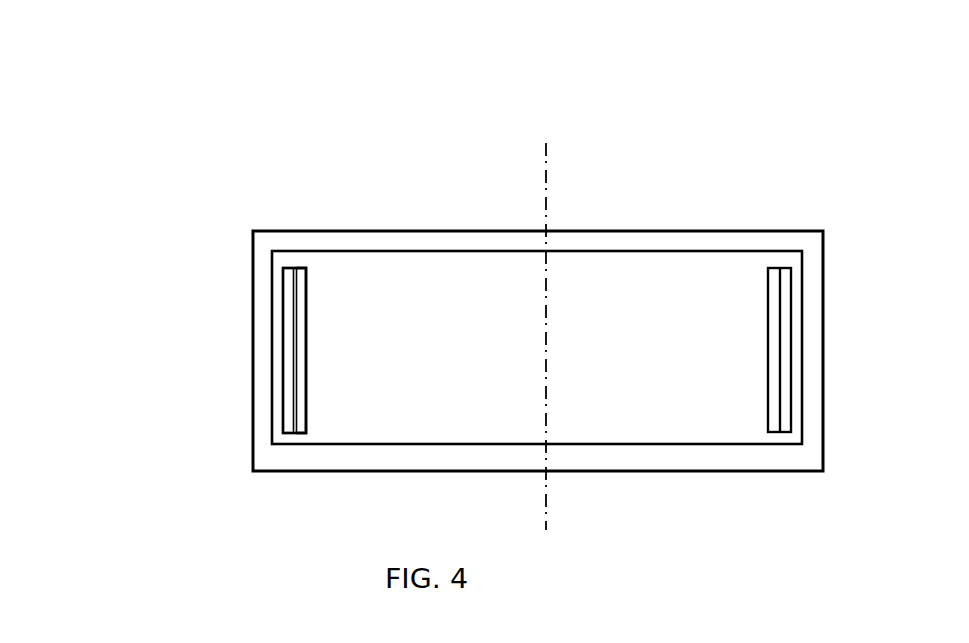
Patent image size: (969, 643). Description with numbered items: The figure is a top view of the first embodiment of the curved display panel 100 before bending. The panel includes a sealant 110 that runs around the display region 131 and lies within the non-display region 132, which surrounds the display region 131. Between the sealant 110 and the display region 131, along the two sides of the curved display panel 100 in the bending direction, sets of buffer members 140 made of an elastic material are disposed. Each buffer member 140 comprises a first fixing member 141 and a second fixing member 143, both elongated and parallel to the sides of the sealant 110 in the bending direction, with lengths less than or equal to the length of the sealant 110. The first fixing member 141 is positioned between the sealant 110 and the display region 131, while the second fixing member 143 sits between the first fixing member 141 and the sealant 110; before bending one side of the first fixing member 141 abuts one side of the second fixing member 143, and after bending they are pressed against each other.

The curved display panel 100 is at (200, 147).
The sealant 110 is at (272, 332).
The display region 131 is at (620, 352).
The non-display region 132 is at (283, 387).
The buffer member 140 is at (408, 88).
The first fixing member 141 is at (307, 300).
The second fixing member 143 is at (289, 298).